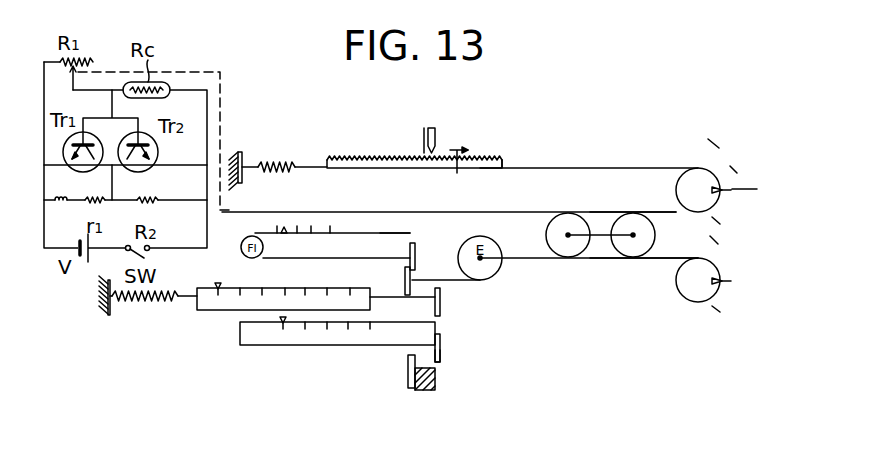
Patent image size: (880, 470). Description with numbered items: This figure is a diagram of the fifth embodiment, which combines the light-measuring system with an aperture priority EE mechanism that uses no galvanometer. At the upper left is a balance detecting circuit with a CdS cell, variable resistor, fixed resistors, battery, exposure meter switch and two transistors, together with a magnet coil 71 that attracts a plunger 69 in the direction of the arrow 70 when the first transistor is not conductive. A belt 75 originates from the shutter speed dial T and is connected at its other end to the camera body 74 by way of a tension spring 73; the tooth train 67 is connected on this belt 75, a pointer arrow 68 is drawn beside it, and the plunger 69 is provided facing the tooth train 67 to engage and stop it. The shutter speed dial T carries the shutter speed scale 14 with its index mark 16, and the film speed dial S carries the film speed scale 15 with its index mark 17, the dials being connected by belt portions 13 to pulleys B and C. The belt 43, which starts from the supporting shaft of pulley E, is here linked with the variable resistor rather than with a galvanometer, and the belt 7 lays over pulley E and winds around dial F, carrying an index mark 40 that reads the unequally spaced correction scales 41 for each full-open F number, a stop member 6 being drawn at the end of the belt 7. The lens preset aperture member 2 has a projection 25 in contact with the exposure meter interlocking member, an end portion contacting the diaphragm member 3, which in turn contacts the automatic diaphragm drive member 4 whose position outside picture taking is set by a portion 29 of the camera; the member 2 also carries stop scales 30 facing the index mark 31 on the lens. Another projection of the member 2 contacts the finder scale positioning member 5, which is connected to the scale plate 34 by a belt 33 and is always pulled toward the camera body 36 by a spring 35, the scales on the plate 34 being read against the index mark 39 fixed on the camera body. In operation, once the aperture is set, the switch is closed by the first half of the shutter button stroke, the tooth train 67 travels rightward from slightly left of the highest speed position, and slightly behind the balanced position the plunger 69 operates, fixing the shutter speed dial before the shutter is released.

The lens preset aperture member 2 is at (432, 327).
The diaphragm member 3 is at (440, 350).
The automatic diaphragm drive member 4 is at (408, 370).
The finder scale positioning member 5 is at (440, 308).
The stop member 6 is at (417, 251).
The belt 7 is at (393, 233).
The transmission cable 13 is at (657, 212).
The shutter speed scale 14 is at (708, 151).
The film speed scale 15 is at (714, 314).
The index mark 16 is at (723, 172).
The index mark 17 is at (720, 276).
The projection 25 is at (432, 308).
The portion of the camera 29 is at (427, 390).
The stop scales 30 is at (276, 345).
The index mark 31 is at (280, 319).
The belt 33 is at (405, 271).
The scale plate 34 is at (294, 291).
The spring 35 is at (156, 300).
The camera body 36 is at (104, 288).
The index mark 39 is at (219, 284).
The index mark 40 is at (270, 233).
The correction scales 41 is at (337, 227).
The belt 43 is at (531, 212).
The tooth train 67 is at (489, 168).
The pointer arrow 68 is at (457, 173).
The plunger 69 is at (437, 140).
The arrow 70 is at (414, 147).
The magnet coil 71 is at (61, 204).
The tension spring 73 is at (278, 165).
The camera body 74 is at (237, 150).
The belt 75 is at (565, 167).